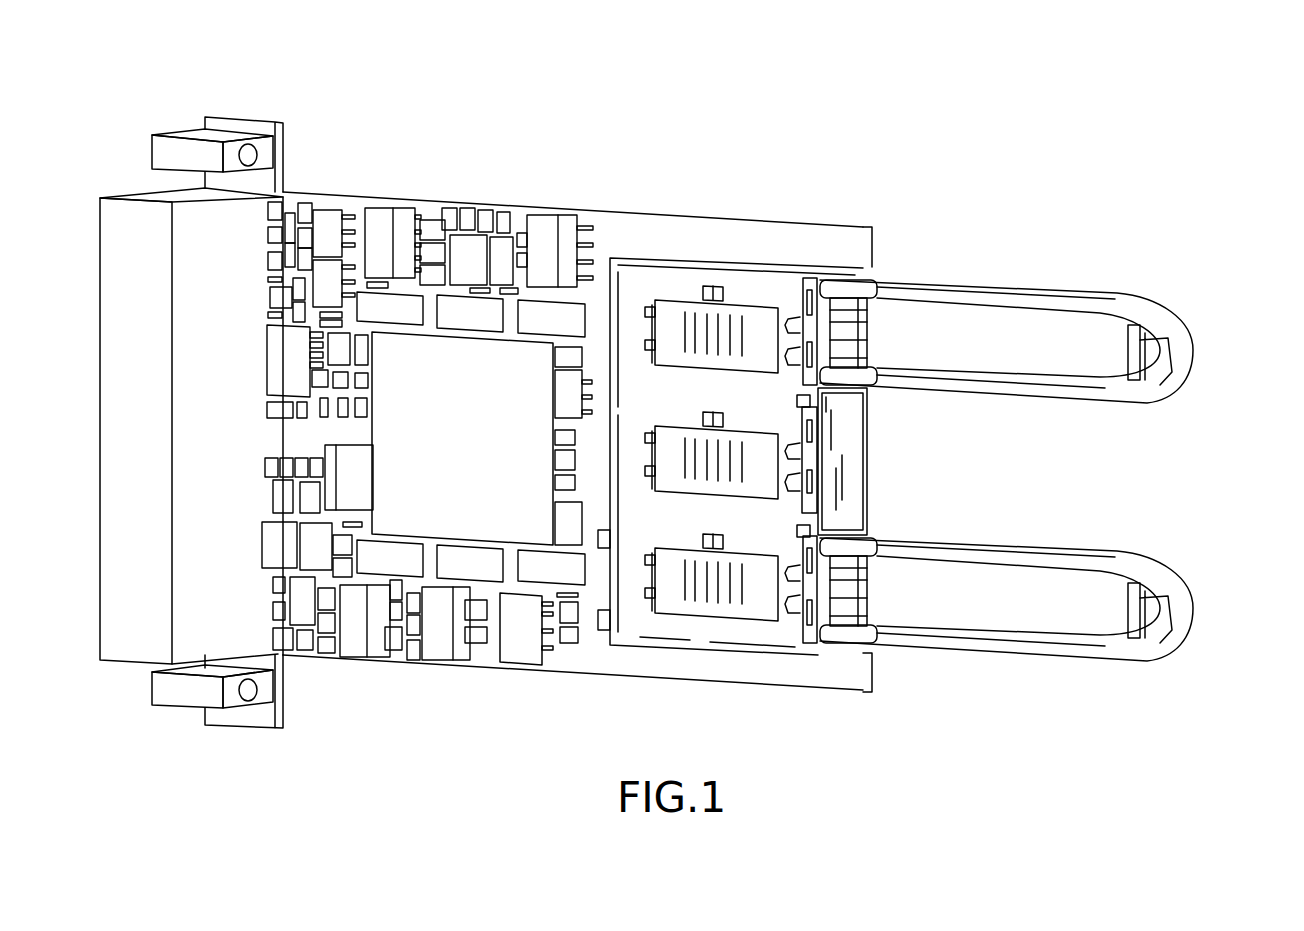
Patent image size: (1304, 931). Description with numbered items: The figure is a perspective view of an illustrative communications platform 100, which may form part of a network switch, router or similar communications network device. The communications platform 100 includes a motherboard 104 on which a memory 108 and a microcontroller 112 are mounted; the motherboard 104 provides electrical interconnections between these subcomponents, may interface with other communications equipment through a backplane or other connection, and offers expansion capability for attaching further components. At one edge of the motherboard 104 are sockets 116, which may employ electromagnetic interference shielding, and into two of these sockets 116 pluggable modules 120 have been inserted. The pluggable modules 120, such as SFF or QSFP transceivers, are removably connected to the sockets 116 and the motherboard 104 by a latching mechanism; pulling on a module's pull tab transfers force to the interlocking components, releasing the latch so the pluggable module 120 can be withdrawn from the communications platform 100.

The communications platform 100 is at (1192, 123).
The motherboard 104 is at (648, 213).
The memory 108 is at (517, 643).
The microcontroller 112 is at (480, 378).
The sockets 116 is at (793, 290).
The pluggable modules 120 is at (1179, 282).